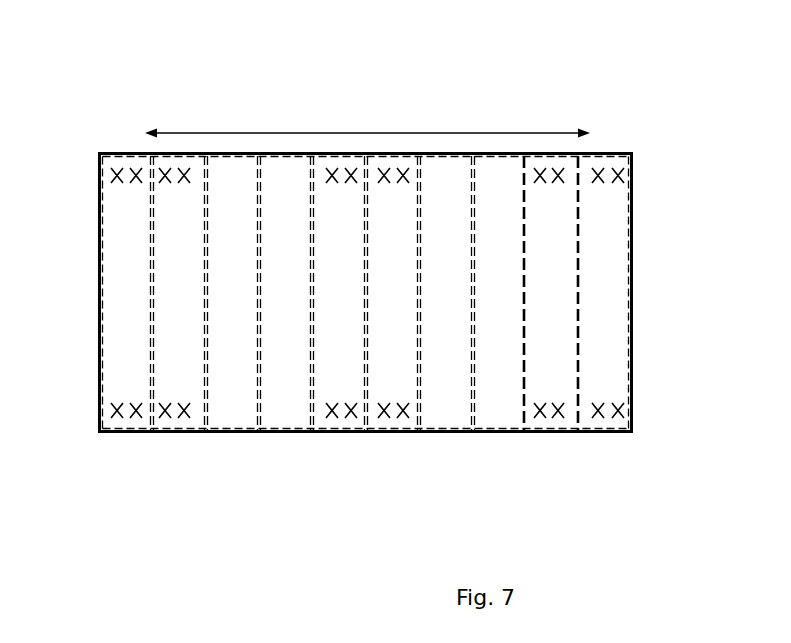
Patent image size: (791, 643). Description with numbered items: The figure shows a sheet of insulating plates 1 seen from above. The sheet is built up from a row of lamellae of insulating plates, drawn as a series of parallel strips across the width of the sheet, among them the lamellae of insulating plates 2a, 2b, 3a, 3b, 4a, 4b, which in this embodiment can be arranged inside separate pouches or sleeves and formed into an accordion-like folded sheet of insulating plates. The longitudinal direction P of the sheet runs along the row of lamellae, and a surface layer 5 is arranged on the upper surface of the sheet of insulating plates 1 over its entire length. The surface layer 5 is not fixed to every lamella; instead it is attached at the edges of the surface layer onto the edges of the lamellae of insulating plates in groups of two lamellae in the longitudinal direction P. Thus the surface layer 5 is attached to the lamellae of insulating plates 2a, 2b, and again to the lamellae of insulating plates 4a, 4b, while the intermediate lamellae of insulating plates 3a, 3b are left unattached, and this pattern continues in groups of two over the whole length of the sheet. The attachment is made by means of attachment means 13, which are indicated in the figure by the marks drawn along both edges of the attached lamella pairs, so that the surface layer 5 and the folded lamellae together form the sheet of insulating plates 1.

The sheet of insulating plates 1 is at (199, 86).
The attachment means 13 is at (116, 165).
The surface layer 5 is at (633, 250).
The lamella of insulating plate 2a is at (109, 330).
The lamella of insulating plate 2b is at (197, 420).
The lamella of insulating plate 3a is at (242, 409).
The lamella of insulating plate 3b is at (277, 409).
The lamella of insulating plate 4a is at (332, 355).
The lamella of insulating plate 4b is at (400, 372).